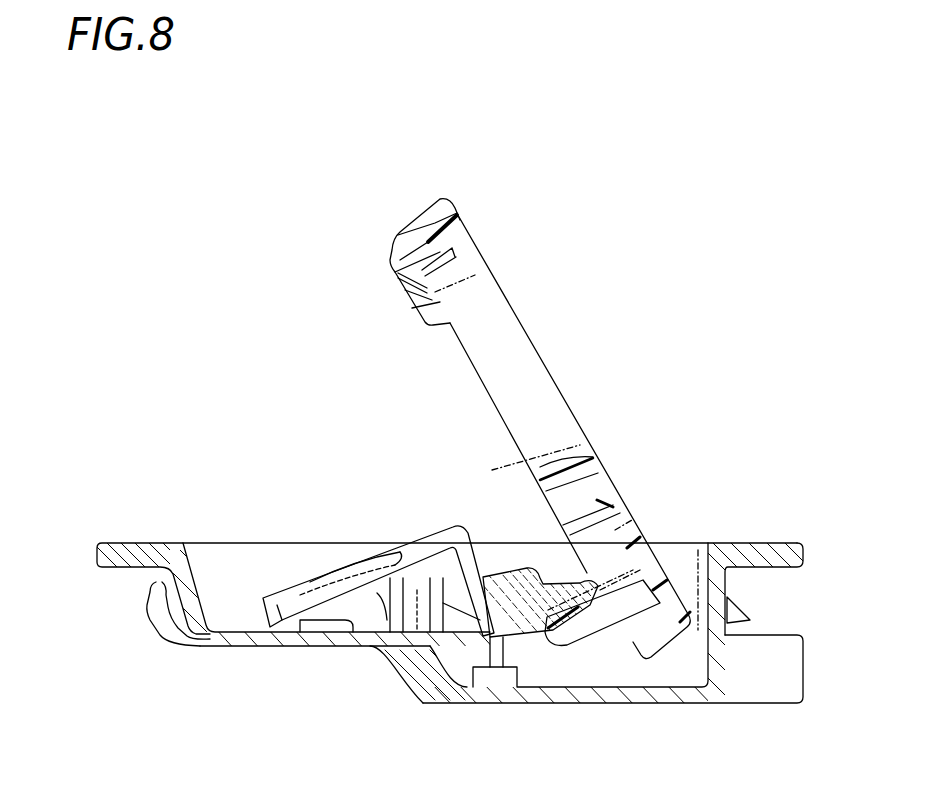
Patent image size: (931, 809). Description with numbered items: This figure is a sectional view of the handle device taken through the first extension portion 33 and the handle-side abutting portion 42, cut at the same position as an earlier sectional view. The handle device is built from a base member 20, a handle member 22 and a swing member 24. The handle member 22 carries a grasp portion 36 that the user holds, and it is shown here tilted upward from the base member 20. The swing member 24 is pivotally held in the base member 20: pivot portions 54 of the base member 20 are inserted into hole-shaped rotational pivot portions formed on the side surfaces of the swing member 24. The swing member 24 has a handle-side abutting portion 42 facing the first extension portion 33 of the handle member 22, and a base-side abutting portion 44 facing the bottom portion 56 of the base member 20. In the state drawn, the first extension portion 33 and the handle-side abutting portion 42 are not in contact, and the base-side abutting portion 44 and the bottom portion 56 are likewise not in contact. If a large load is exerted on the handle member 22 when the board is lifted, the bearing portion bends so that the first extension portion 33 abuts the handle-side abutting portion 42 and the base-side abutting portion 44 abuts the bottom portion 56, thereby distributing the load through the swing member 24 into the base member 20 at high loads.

The base member 20 is at (149, 545).
The handle member 22 is at (540, 362).
The swing member 24 is at (435, 533).
The first extension portion 33 is at (578, 617).
The grasp portion 36 is at (468, 230).
The handle-side abutting portion 42 is at (567, 600).
The base-side abutting portion 44 is at (268, 598).
The pivot portion 54 is at (408, 630).
The bottom portion 56 is at (273, 643).